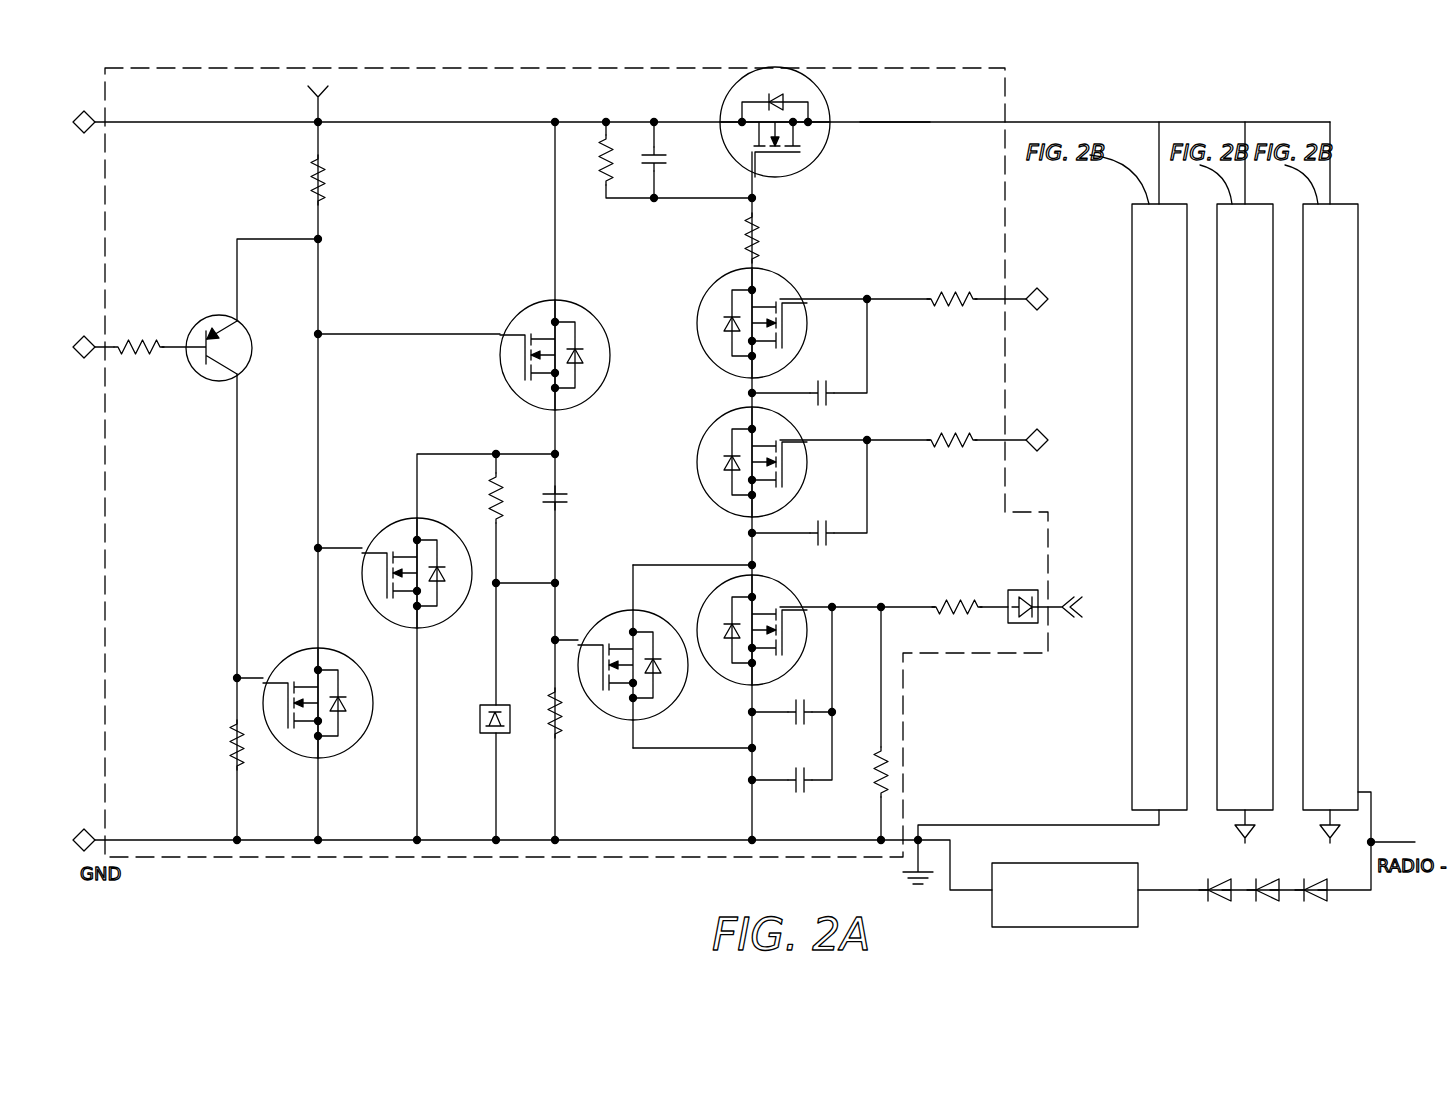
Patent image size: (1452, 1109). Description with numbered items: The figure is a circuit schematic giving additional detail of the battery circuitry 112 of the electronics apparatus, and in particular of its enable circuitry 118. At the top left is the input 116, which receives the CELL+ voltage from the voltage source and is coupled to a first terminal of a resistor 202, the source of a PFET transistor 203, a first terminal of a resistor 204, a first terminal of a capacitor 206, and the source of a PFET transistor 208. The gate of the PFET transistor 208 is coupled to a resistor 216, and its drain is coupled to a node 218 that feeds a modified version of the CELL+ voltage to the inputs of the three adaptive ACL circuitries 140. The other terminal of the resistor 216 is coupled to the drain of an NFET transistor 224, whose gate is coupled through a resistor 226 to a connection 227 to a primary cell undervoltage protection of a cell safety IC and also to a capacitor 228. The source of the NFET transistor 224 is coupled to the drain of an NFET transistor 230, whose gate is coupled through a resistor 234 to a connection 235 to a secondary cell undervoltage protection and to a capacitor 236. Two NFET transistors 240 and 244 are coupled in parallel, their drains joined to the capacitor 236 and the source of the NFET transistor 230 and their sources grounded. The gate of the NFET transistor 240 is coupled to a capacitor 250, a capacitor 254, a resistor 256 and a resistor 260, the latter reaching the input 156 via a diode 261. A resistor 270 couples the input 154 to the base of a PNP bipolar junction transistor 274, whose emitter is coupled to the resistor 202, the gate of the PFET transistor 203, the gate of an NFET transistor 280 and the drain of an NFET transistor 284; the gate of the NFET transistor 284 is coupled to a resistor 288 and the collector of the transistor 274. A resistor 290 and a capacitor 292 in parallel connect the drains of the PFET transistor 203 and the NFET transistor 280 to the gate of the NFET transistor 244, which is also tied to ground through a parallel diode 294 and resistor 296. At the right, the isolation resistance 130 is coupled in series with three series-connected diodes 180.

The battery circuitry 112 is at (1220, 75).
The input 116 is at (95, 130).
The enable circuitry 118 is at (385, 858).
The isolation resistance 130 is at (1138, 878).
The adaptive ACL circuitries 140 is at (1178, 518).
The input 154 is at (95, 356).
The input 156 is at (1062, 596).
The series-connected diodes 180 is at (1338, 919).
The resistor 202 is at (311, 184).
The PFET transistor 203 is at (520, 322).
The resistor 204 is at (598, 178).
The capacitor 206 is at (646, 166).
The PFET transistor 208 is at (732, 108).
The resistor 216 is at (762, 232).
The node 218 is at (893, 122).
The NFET transistor 224 is at (780, 284).
The resistor 226 is at (950, 290).
The connection 227 is at (1048, 304).
The capacitor 228 is at (830, 386).
The NFET transistor 230 is at (712, 418).
The resistor 234 is at (950, 430).
The connection 235 is at (1048, 445).
The capacitor 236 is at (830, 526).
The NFET transistor 240 is at (720, 680).
The NFET transistor 244 is at (603, 705).
The capacitor 250 is at (792, 722).
The capacitor 254 is at (792, 792).
The resistor 256 is at (890, 768).
The resistor 260 is at (955, 597).
The diode 261 is at (1022, 590).
The resistor 270 is at (128, 347).
The PNP bipolar junction transistor 274 is at (248, 362).
The NFET transistor 280 is at (442, 626).
The NFET transistor 284 is at (338, 757).
The resistor 288 is at (230, 748).
The resistor 290 is at (490, 500).
The capacitor 292 is at (562, 494).
The diode 294 is at (478, 722).
The resistor 296 is at (550, 724).